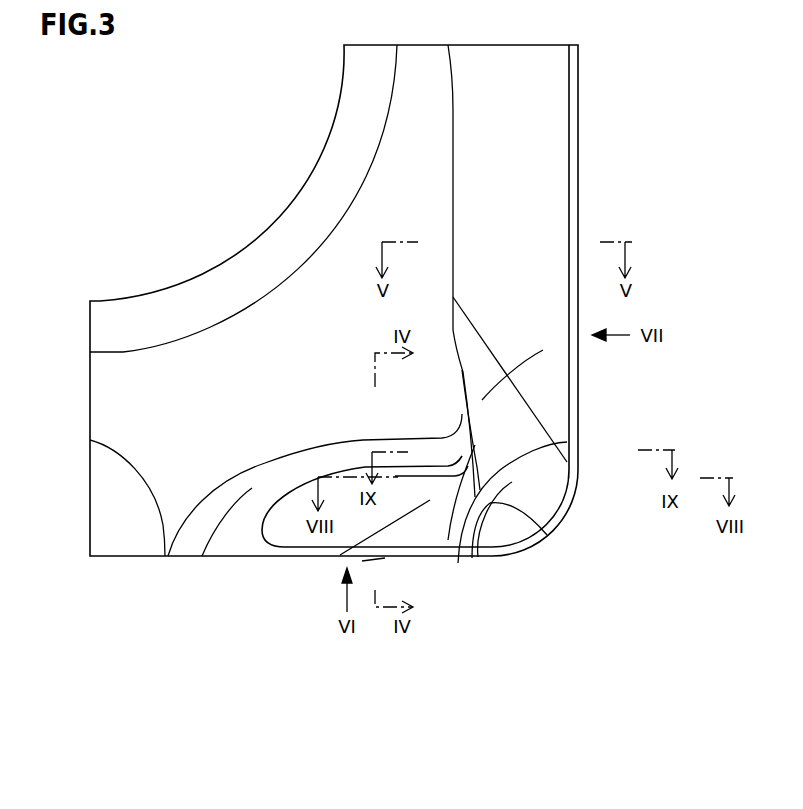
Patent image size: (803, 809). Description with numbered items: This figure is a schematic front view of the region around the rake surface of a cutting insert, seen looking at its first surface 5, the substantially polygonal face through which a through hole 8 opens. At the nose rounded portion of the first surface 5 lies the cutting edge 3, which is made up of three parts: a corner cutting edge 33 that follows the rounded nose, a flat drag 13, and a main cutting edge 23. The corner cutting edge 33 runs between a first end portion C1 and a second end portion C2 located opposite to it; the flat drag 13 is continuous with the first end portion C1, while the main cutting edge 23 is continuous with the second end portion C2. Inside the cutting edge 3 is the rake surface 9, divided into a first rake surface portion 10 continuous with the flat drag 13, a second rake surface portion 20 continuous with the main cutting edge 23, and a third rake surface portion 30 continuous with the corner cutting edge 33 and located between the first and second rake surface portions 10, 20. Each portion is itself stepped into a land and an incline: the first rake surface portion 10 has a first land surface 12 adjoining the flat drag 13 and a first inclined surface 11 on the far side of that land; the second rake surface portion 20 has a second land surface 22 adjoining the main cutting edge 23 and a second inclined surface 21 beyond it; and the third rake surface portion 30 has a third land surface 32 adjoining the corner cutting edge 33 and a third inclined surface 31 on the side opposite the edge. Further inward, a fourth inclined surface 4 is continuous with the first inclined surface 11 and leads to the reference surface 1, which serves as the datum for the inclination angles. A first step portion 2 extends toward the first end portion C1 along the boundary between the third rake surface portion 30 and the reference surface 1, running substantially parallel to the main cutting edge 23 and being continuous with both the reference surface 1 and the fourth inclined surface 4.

The reference surface 1 is at (285, 415).
The first step portion 2 is at (458, 563).
The cutting edge 3 is at (695, 540).
The fourth inclined surface 4 is at (250, 488).
The first surface 5 is at (170, 745).
The through hole 8 is at (262, 265).
The rake surface 9 is at (527, 713).
The first rake surface portion 10 is at (325, 682).
The first inclined surface 11 is at (340, 555).
The first land surface 12 is at (362, 561).
The flat drag 13 is at (495, 562).
The second rake surface portion 20 is at (122, 535).
The second inclined surface 21 is at (482, 400).
The second land surface 22 is at (448, 540).
The main cutting edge 23 is at (578, 407).
The third rake surface portion 30 is at (542, 682).
The third inclined surface 31 is at (472, 558).
The third land surface 32 is at (478, 557).
The corner cutting edge 33 is at (547, 535).
The first end portion C1 is at (495, 558).
The second end portion C2 is at (578, 467).